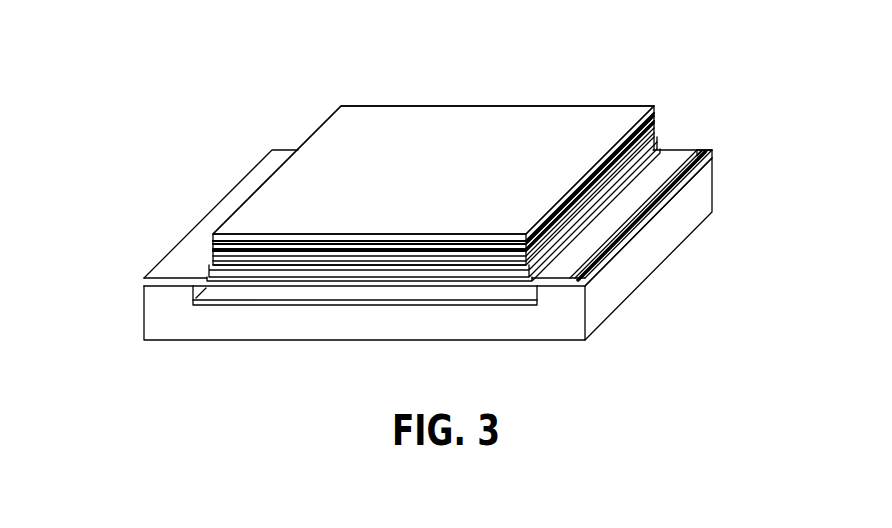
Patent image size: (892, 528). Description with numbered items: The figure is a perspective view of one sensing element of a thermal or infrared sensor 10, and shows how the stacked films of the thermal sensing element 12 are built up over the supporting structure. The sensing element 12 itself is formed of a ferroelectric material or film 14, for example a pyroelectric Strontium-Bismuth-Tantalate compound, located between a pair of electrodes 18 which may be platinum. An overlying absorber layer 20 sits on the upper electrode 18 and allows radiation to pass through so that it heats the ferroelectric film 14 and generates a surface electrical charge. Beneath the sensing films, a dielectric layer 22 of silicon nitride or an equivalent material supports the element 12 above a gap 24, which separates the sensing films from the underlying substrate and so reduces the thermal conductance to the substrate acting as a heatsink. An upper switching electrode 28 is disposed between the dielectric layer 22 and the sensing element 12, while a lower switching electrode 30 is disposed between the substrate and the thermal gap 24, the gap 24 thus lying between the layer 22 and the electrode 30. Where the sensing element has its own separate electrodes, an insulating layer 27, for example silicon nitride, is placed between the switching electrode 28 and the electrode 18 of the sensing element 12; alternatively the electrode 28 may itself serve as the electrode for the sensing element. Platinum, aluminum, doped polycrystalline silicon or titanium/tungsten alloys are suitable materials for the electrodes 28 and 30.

The thermal sensor 10 is at (276, 105).
The thermal sensing element 12 is at (347, 105).
The ferroelectric material 14 is at (656, 137).
The electrode 18 is at (656, 123).
The absorber layer 20 is at (612, 117).
The dielectric layer 22 is at (613, 255).
The gap 24 is at (307, 292).
The insulating layer 27 is at (622, 177).
The upper switching electrode 28 is at (633, 213).
The lower switching electrode 30 is at (519, 303).